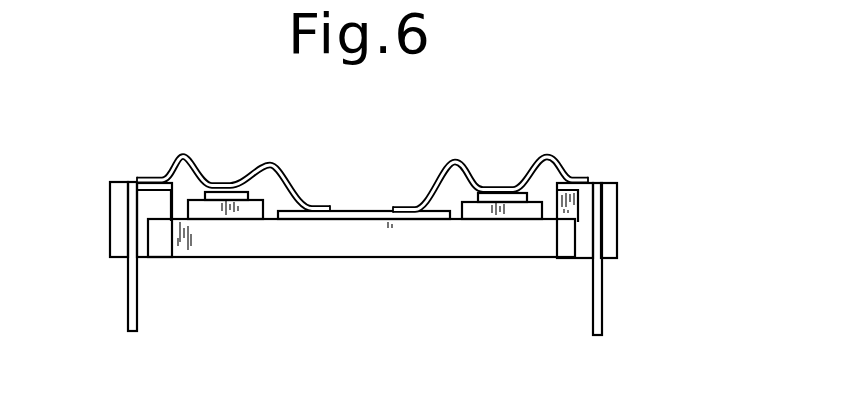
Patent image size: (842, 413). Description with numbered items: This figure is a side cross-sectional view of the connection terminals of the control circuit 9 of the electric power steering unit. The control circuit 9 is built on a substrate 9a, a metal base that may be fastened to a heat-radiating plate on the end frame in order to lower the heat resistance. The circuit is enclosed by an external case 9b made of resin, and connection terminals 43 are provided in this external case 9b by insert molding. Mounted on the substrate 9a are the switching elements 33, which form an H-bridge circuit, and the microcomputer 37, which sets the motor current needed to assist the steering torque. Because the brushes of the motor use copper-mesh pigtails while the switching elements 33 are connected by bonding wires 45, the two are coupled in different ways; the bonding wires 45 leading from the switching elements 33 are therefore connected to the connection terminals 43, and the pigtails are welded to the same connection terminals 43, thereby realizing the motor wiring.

The control circuit 9 is at (407, 212).
The substrate 9a is at (357, 242).
The external case 9b is at (617, 198).
The switching elements 33 is at (218, 212).
The microcomputer 37 is at (358, 211).
The connection terminals 43 is at (602, 293).
The bonding wires 45 is at (472, 168).